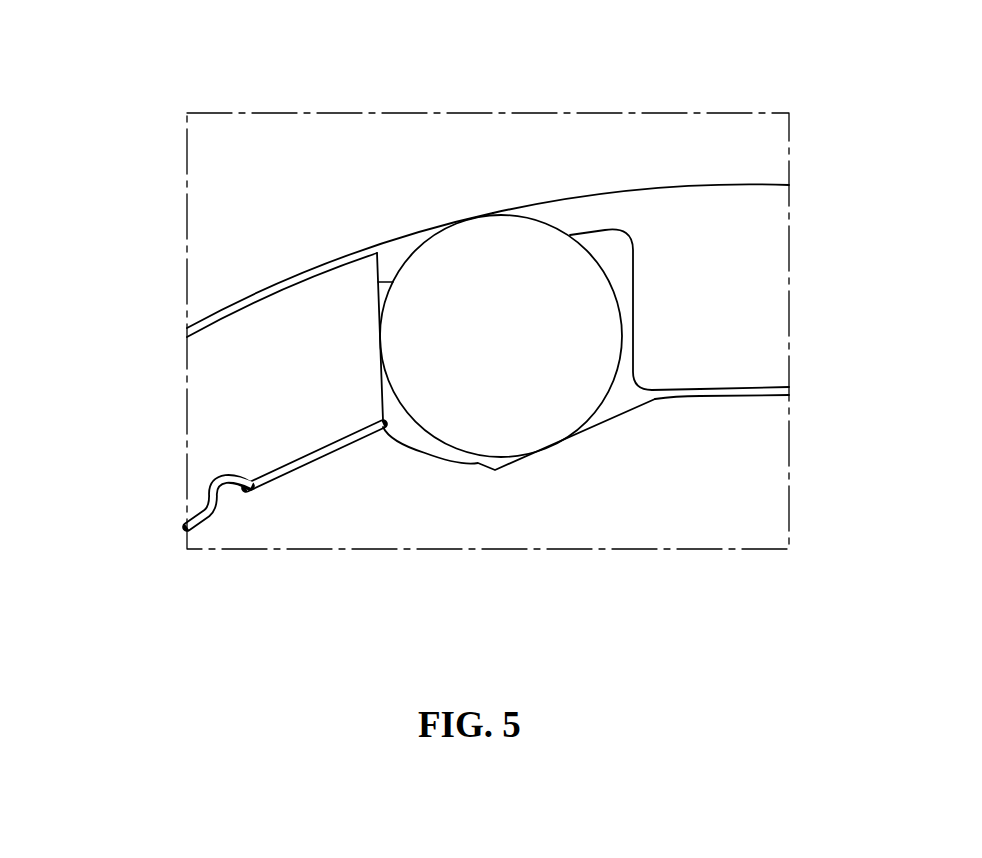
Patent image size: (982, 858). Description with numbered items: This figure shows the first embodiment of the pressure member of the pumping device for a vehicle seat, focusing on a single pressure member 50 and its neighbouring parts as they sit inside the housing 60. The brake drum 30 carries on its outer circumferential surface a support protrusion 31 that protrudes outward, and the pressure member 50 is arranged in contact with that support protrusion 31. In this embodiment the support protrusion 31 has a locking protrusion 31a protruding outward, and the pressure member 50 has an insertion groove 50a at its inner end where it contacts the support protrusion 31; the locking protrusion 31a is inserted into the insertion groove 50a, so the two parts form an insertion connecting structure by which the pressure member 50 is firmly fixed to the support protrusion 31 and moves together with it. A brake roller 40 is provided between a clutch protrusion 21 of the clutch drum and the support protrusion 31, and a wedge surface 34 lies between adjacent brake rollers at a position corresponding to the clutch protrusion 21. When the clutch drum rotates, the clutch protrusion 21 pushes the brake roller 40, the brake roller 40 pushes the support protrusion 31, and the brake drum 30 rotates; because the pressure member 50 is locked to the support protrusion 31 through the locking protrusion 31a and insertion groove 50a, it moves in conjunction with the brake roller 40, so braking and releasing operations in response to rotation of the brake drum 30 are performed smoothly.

The clutch protrusion 21 is at (733, 302).
The brake drum 30 is at (572, 503).
The support protrusion 31 is at (334, 462).
The locking protrusion 31a is at (223, 495).
The wedge surface 34 is at (626, 413).
The brake roller 40 is at (506, 277).
The pressure member 50 is at (253, 363).
The insertion groove 50a is at (228, 483).
The housing 60 is at (453, 157).